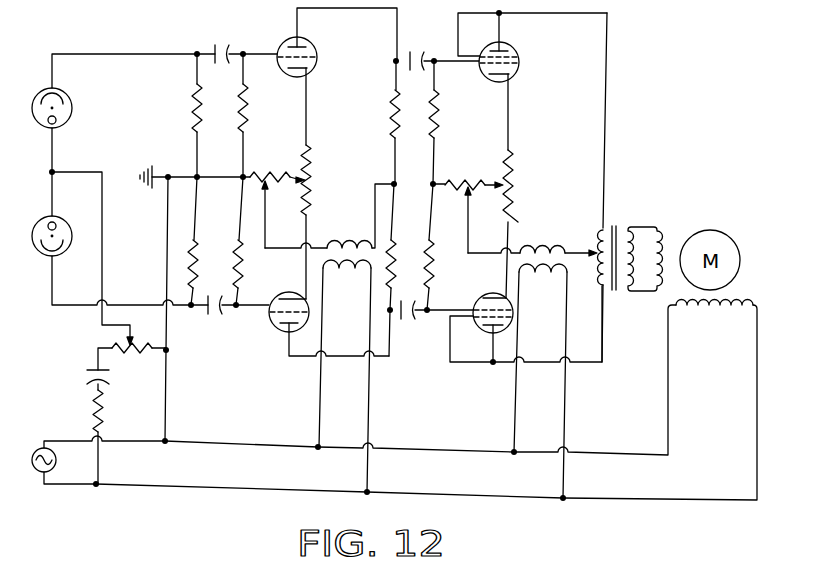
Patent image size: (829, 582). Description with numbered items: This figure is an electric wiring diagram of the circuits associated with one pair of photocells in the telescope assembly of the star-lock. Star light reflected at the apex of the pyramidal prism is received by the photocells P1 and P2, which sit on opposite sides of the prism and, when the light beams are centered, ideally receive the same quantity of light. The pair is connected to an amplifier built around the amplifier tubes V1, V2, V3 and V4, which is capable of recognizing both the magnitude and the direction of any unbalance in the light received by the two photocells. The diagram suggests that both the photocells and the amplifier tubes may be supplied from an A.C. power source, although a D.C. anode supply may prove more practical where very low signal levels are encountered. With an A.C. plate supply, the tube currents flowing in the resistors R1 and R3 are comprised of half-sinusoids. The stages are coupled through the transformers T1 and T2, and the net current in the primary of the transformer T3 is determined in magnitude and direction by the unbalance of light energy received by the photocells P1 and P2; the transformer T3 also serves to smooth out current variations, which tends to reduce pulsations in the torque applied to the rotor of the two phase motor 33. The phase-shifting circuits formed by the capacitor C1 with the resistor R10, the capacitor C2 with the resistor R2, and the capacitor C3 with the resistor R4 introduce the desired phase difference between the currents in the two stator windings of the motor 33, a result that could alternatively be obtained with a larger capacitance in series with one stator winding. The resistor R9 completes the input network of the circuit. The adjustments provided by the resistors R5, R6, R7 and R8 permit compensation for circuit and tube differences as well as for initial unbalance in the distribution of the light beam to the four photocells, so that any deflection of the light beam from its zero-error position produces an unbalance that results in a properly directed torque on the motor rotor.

The photocell P1 is at (58, 114).
The photocell P2 is at (58, 240).
The capacitor C1 is at (83, 380).
The capacitor C2 is at (216, 182).
The capacitor C3 is at (411, 190).
The amplifier tube V1 is at (294, 53).
The amplifier tube V2 is at (278, 315).
The amplifier tube V3 is at (493, 57).
The amplifier tube V4 is at (484, 320).
The resistor R1 is at (202, 188).
The resistor R2 is at (249, 189).
The resistor R3 is at (401, 191).
The resistor R4 is at (440, 191).
The adjustable resistor R5 is at (270, 169).
The adjustable resistor R6 is at (316, 183).
The adjustable resistor R7 is at (465, 177).
The adjustable resistor R8 is at (519, 187).
The resistor R9 is at (109, 414).
The resistor R10 is at (133, 361).
The transformer T1 is at (345, 366).
The transformer T2 is at (540, 372).
The transformer T3 is at (630, 268).
The two phase motor 33 is at (694, 240).